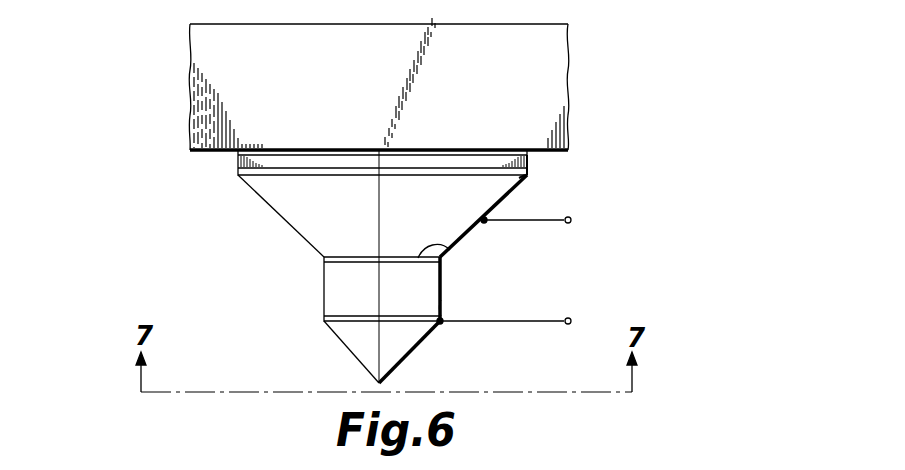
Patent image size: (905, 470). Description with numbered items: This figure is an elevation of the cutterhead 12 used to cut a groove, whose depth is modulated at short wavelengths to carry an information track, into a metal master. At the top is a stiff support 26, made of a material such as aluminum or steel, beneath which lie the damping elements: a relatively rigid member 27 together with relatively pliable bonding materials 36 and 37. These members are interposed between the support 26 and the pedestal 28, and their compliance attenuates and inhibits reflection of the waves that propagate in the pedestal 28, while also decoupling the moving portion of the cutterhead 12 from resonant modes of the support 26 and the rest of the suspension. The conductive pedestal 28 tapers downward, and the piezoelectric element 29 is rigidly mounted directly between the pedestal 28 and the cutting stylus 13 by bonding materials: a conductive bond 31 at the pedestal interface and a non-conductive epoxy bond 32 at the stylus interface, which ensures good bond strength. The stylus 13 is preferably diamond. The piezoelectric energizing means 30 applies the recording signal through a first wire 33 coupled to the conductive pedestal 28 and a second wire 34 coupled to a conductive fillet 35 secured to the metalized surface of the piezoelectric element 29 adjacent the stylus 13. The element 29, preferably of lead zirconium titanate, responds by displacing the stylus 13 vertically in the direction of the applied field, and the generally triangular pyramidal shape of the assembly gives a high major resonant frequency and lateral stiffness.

The cutterhead 12 is at (152, 261).
The cutting stylus 13 is at (350, 348).
The support 26 is at (195, 100).
The damping member 27 is at (236, 163).
The pedestal 28 is at (284, 224).
The piezoelectric element 29 is at (324, 293).
The piezoelectric energizing means 30 is at (590, 283).
The bonding material 31 is at (450, 250).
The bonding material 32 is at (422, 330).
The first wire 33 is at (544, 228).
The second wire 34 is at (508, 332).
The fillet 35 is at (441, 298).
The bonding material 36 is at (528, 163).
The bonding material 37 is at (517, 183).